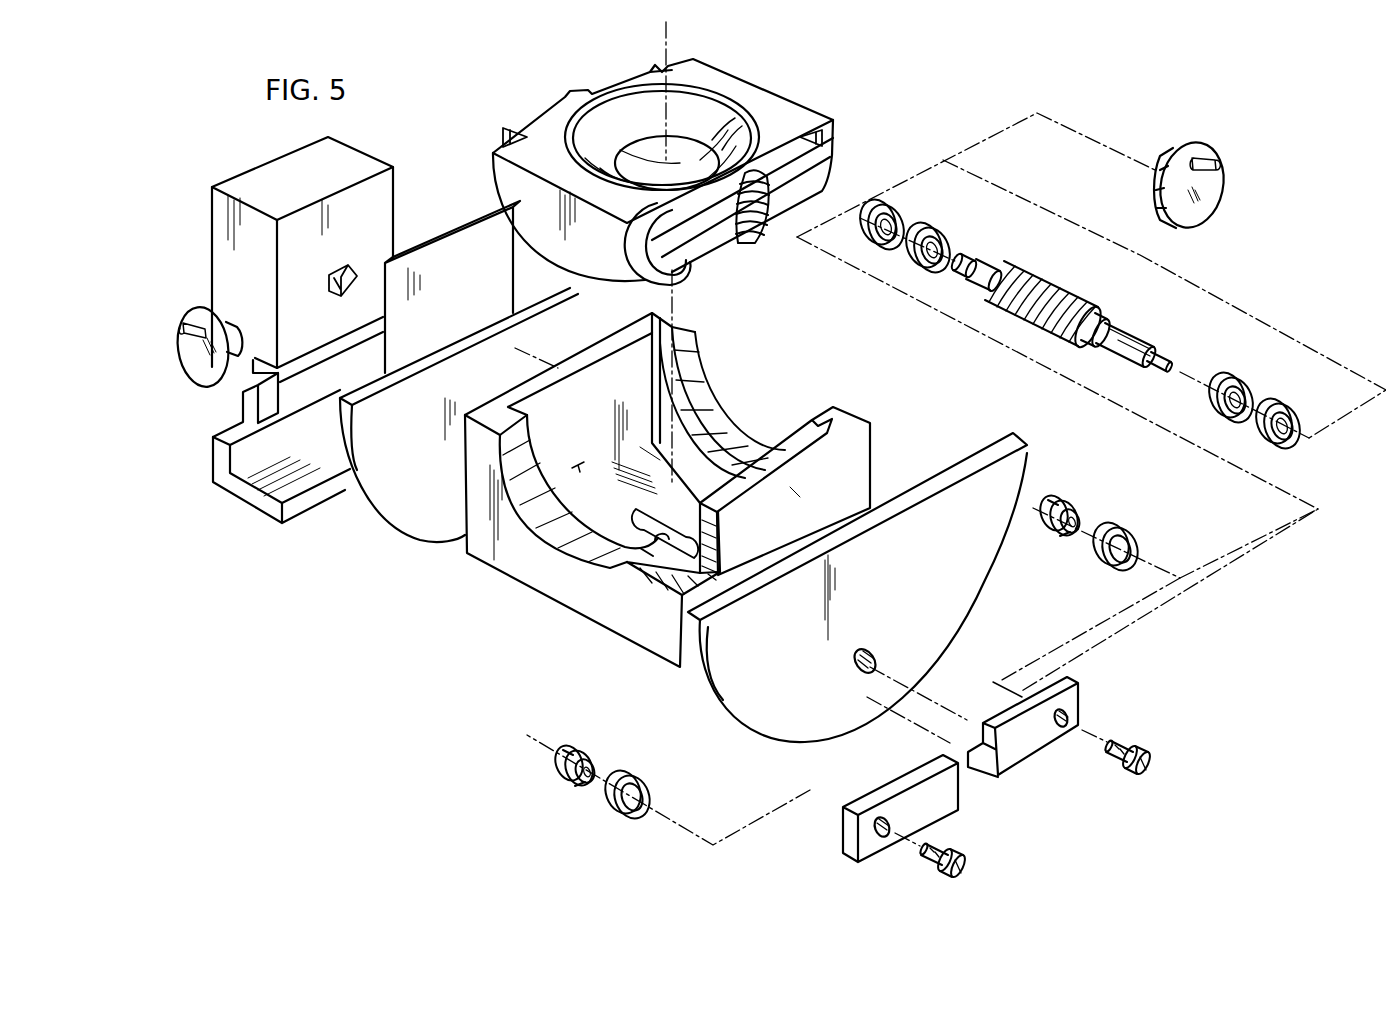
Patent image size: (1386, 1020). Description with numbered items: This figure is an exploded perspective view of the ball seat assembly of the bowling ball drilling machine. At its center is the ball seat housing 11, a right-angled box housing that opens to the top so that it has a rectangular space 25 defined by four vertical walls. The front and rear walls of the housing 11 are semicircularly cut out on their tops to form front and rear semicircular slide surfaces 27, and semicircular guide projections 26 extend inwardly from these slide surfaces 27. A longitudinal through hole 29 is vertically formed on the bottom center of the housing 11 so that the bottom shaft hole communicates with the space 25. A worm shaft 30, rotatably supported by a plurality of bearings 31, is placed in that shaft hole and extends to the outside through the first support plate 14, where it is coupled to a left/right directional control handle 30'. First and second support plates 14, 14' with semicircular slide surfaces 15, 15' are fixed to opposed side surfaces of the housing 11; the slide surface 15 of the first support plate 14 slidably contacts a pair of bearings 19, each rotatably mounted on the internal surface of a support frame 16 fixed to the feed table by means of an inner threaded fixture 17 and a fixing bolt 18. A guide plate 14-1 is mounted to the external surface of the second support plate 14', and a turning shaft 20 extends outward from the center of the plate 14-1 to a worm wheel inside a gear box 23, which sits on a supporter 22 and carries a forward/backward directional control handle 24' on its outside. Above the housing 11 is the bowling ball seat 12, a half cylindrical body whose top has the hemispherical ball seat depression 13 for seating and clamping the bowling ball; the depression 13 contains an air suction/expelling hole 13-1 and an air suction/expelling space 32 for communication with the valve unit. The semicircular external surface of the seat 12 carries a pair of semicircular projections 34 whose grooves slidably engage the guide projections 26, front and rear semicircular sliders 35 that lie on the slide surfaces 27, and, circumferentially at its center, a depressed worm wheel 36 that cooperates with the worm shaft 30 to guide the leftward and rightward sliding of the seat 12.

The ball seat housing 11 is at (558, 610).
The bowling ball seat 12 is at (740, 80).
The hemispherical ball seat depression 13 is at (722, 127).
The air suction/expelling hole 13-1 is at (703, 162).
The first support plate 14 is at (857, 506).
The second support plate 14' is at (454, 449).
The guide plate 14-1 is at (482, 235).
The semicircular slide surface 15 is at (860, 621).
The semicircular slide surface 15' is at (402, 510).
The support frame 16 is at (845, 850).
The inner threaded fixture 17 is at (1078, 508).
The fixing bolt 18 is at (1120, 757).
The bearing 19 is at (1128, 530).
The turning shaft 20 is at (350, 275).
The supporter 22 is at (213, 460).
The gear box 23 is at (213, 257).
The forward/backward directional control handle 24' is at (183, 355).
The rectangular space 25 is at (578, 468).
The semicircular guide projection 26 is at (528, 413).
The semicircular slide surface 27 is at (712, 440).
The longitudinal through hole 29 is at (653, 557).
The worm shaft 30 is at (1061, 293).
The left/right directional control handle 30' is at (1218, 199).
The bearing 31 is at (931, 223).
The air suction/expelling space 32 is at (645, 148).
The semicircular projection 34 is at (510, 134).
The semicircular slider 35 is at (556, 275).
The depressed worm wheel 36 is at (822, 170).